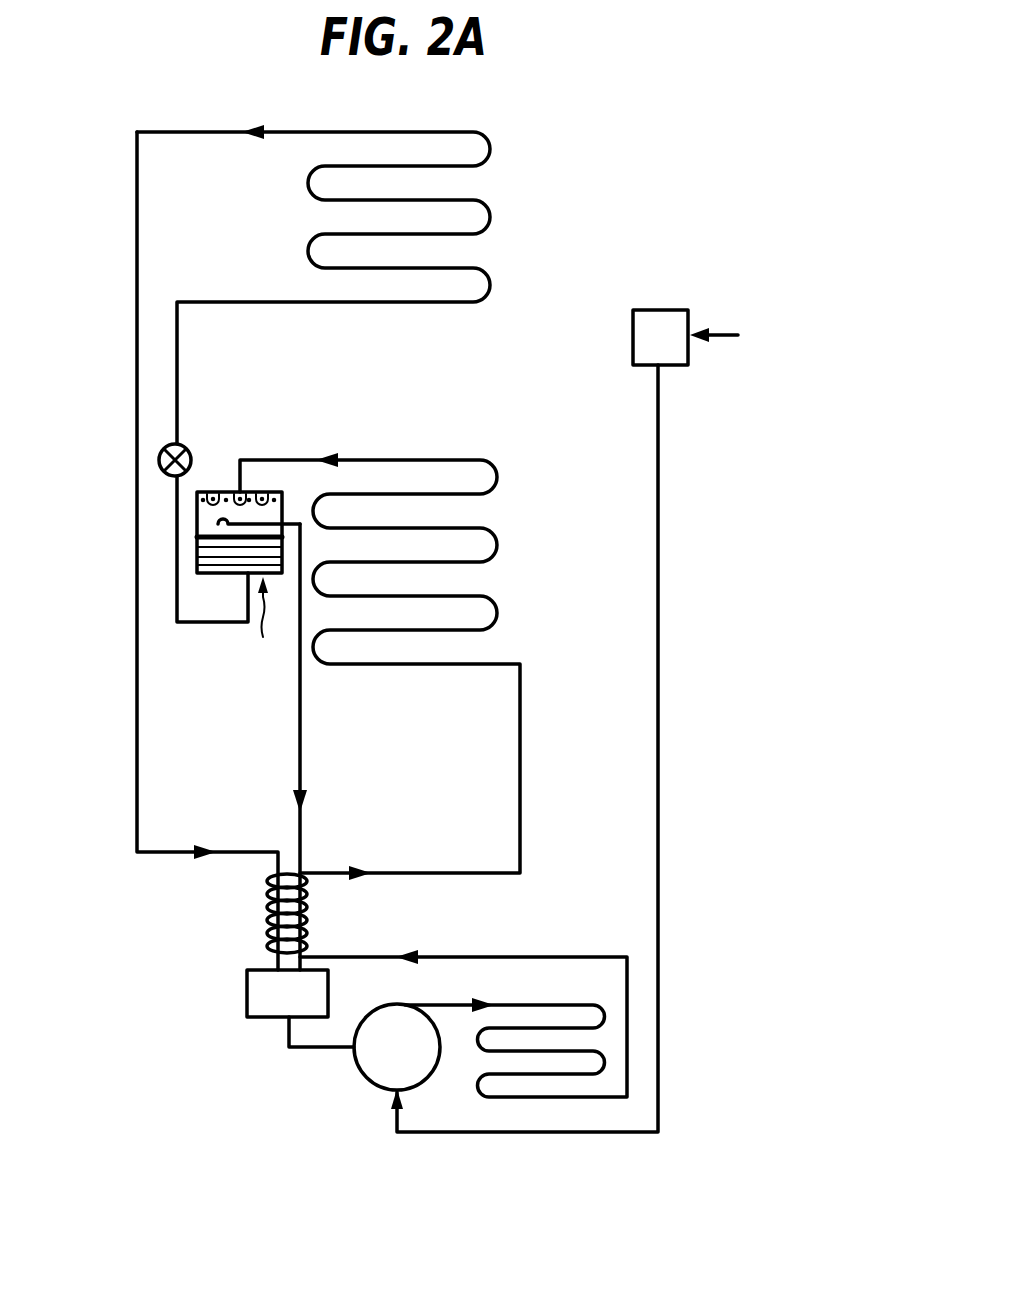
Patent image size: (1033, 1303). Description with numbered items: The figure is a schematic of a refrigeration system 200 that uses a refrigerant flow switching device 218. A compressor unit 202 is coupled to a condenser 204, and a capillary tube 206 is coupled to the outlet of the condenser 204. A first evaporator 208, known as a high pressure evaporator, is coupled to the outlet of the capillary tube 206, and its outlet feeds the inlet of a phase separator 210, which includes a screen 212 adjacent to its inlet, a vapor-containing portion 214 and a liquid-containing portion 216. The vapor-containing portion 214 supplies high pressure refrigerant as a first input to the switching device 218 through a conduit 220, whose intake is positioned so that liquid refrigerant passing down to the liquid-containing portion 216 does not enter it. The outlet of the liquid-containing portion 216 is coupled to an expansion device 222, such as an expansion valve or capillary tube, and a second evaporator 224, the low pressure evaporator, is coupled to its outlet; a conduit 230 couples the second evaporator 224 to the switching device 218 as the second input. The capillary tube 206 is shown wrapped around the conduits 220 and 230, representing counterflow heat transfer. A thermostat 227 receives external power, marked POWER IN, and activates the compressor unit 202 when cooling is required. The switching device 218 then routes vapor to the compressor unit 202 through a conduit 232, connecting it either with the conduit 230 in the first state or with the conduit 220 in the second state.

The refrigeration system 200 is at (758, 107).
The compressor unit 202 is at (372, 1085).
The condenser 204 is at (477, 1080).
The capillary tube 206 is at (306, 920).
The first evaporator 208 is at (498, 545).
The phase separator 210 is at (262, 622).
The screen 212 is at (197, 508).
The vapor-containing portion 214 is at (197, 527).
The liquid-containing portion 216 is at (197, 558).
The refrigerant flow switching device 218 is at (247, 1000).
The conduit 220 is at (302, 775).
The expansion device 222 is at (192, 452).
The second evaporator 224 is at (490, 219).
The thermostat 227 is at (677, 308).
The conduit 230 is at (137, 782).
The conduit 232 is at (305, 1050).